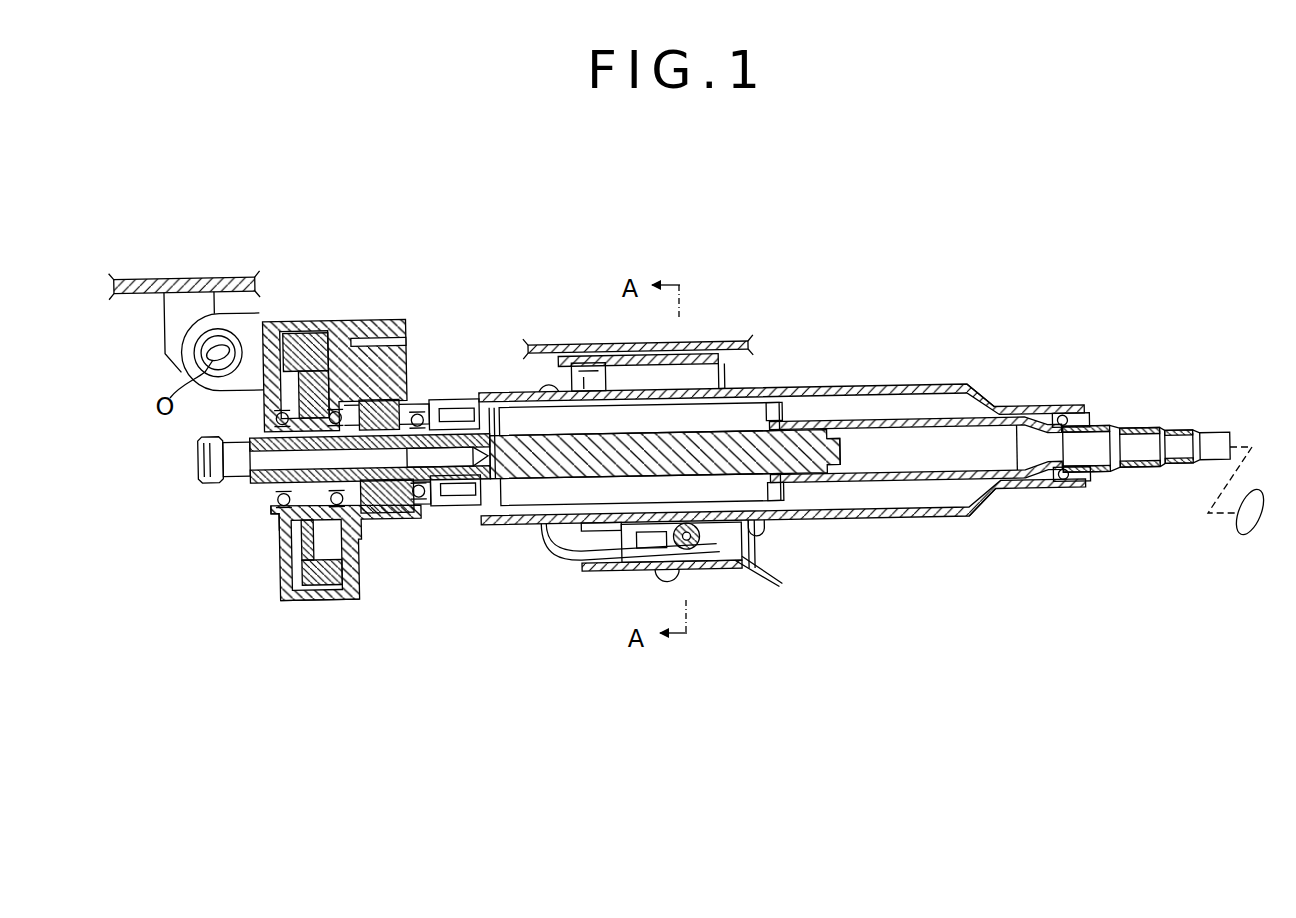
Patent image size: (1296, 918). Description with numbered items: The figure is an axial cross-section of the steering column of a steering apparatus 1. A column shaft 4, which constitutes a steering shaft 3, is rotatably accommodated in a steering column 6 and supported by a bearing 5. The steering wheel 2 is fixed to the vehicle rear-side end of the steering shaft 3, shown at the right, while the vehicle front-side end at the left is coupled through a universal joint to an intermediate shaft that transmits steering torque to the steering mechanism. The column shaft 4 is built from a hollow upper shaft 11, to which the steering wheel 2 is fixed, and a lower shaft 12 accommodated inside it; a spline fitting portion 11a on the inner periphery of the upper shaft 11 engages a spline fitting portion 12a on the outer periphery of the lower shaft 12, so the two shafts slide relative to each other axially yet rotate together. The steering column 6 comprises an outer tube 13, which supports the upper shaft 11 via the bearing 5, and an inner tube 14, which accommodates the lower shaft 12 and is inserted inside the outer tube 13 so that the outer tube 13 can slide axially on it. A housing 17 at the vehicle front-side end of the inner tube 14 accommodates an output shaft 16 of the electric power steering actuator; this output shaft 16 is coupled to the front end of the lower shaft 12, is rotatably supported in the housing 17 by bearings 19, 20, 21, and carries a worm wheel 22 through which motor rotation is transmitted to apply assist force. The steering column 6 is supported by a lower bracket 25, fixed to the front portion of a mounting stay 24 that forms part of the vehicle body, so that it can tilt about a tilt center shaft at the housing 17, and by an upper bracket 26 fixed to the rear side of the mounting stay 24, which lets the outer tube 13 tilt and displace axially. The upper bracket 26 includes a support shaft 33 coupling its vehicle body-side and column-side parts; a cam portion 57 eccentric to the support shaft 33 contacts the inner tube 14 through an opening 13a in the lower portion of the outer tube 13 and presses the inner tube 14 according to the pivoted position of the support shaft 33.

The steering apparatus 1 is at (1093, 206).
The steering wheel 2 is at (1240, 530).
The steering shaft 3 is at (1147, 403).
The column shaft 4 is at (1105, 414).
The bearing 5 is at (1059, 406).
The steering column 6 is at (932, 368).
The upper shaft 11 is at (900, 478).
The spline fitting portion 11a is at (839, 451).
The lower shaft 12 is at (522, 472).
The spline fitting portion 12a is at (780, 420).
The outer tube 13 is at (840, 387).
The opening 13a is at (762, 527).
The inner tube 14 is at (748, 387).
The output shaft 16 is at (437, 416).
The housing 17 is at (387, 320).
The bearing 19 is at (413, 513).
The bearing 20 is at (353, 527).
The bearing 21 is at (277, 523).
The worm wheel 22 is at (294, 601).
The mounting stay 24 is at (216, 282).
The lower bracket 25 is at (167, 314).
The upper bracket 26 is at (702, 342).
The support shaft 33 is at (658, 571).
The cam portion 57 is at (676, 518).